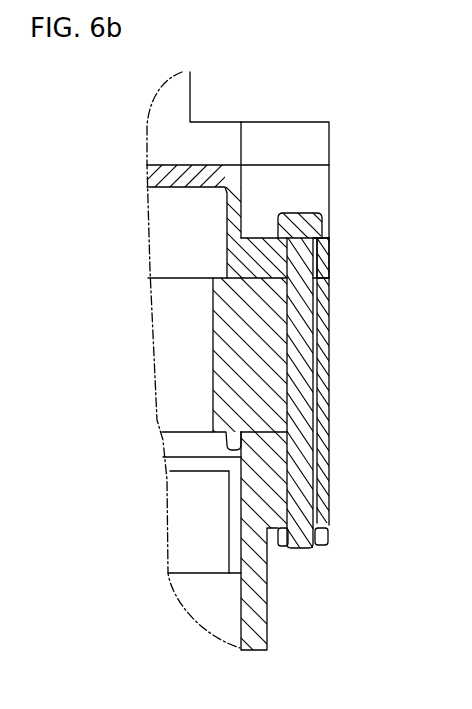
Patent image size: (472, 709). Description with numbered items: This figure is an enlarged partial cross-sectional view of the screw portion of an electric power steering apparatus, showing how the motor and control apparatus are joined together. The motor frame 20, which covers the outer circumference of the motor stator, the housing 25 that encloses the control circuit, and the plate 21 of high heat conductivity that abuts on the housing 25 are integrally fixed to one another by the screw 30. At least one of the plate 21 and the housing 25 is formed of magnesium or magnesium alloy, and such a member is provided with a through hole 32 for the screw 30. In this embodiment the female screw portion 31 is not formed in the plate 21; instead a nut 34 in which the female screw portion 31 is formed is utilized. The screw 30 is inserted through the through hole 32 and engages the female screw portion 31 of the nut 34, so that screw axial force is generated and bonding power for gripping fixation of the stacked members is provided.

The motor frame 20 is at (236, 444).
The plate 21 is at (320, 340).
The housing 25 is at (322, 248).
The screw 30 is at (322, 214).
The female screw portion 31 is at (327, 533).
The through hole 32 is at (299, 380).
The nut 34 is at (328, 545).